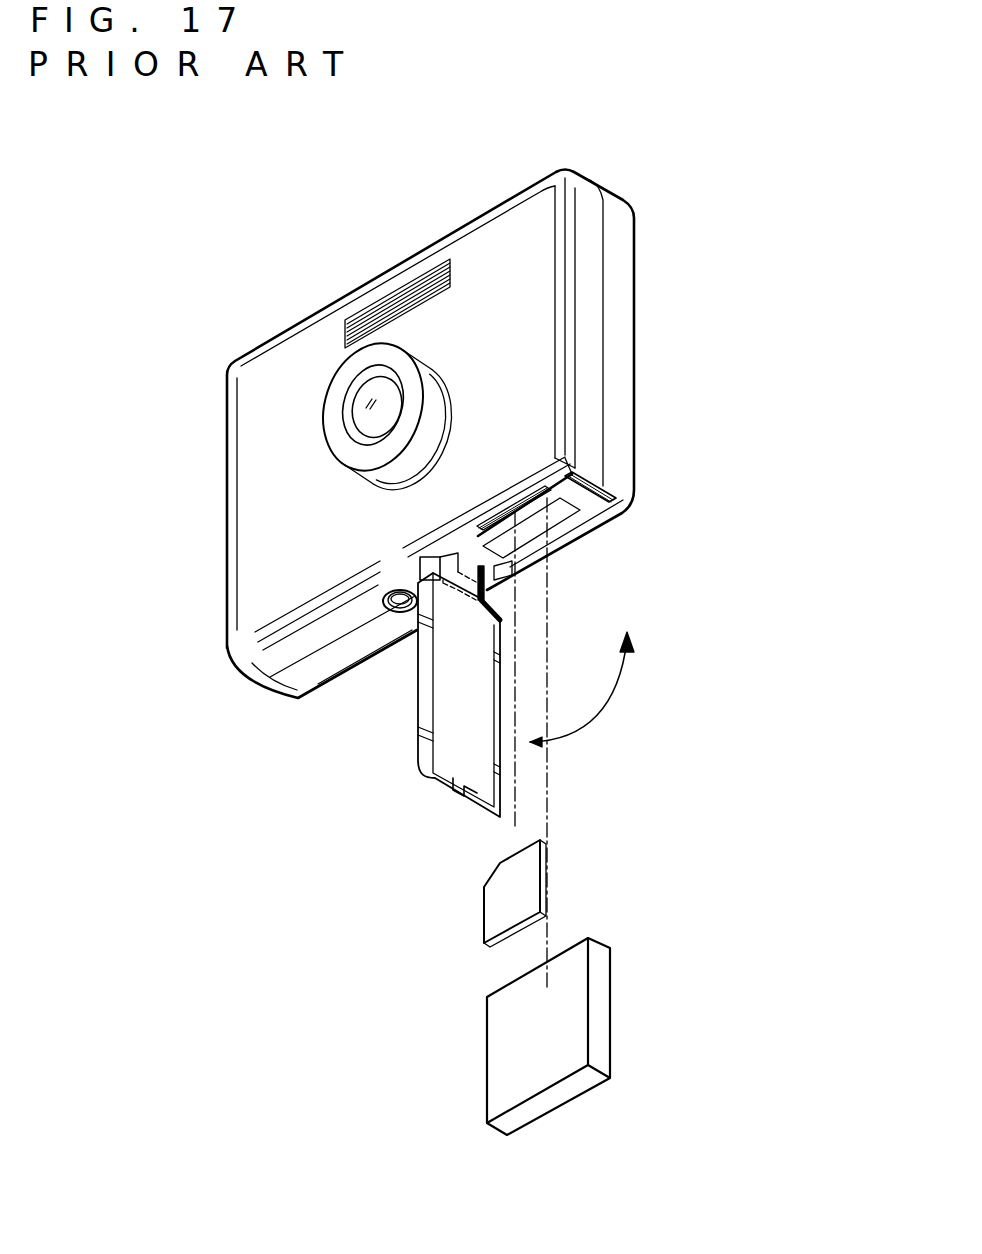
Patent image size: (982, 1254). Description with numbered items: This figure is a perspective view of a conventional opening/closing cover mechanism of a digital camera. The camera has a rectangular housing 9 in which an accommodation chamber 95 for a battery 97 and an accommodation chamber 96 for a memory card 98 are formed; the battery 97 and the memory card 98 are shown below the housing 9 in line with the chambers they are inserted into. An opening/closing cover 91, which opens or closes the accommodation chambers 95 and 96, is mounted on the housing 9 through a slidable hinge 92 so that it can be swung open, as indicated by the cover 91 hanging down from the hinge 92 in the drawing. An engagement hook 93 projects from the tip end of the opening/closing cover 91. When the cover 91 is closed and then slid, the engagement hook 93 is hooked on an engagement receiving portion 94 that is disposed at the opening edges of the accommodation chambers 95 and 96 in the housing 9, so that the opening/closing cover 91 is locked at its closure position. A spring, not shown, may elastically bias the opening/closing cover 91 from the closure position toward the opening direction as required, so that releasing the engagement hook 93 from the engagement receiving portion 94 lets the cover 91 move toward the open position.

The housing 9 is at (587, 300).
The opening/closing cover 91 is at (423, 684).
The slidable hinge 92 is at (465, 566).
The engagement hook 93 is at (463, 790).
The engagement receiving portion 94 is at (608, 492).
The accommodation chamber for battery 95 is at (573, 510).
The accommodation chamber for memory card 96 is at (479, 520).
The battery 97 is at (487, 1055).
The memory card 98 is at (485, 913).